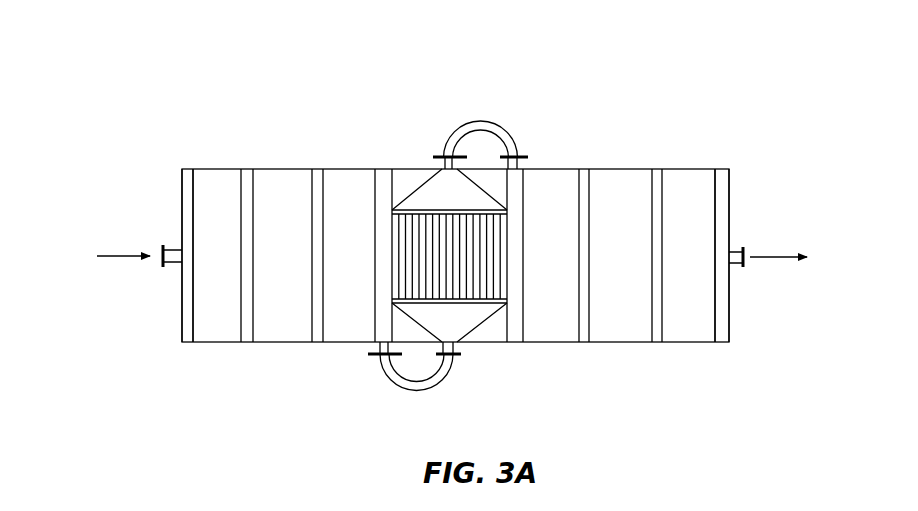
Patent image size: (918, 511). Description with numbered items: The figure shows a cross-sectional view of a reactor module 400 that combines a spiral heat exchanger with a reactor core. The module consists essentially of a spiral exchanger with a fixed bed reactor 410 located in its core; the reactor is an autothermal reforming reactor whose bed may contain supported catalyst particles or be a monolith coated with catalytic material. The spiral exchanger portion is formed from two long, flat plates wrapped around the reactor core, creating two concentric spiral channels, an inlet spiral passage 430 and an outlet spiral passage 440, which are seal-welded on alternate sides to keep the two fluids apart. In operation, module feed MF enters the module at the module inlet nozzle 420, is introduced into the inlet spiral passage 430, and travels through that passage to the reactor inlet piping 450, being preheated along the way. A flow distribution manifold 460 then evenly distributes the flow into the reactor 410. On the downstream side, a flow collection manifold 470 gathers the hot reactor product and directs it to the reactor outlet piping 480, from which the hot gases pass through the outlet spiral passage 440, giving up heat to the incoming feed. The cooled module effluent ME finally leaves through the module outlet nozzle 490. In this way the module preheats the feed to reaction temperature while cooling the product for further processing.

The reactor module 400 is at (147, 115).
The reactor 410 is at (438, 228).
The module inlet nozzle 420 is at (172, 266).
The inlet spiral passage 430 is at (185, 196).
The outlet spiral passage 440 is at (722, 204).
The reactor inlet piping 450 is at (397, 380).
The flow distribution manifold 460 is at (468, 322).
The flow collection manifold 470 is at (478, 182).
The reactor outlet piping 480 is at (481, 121).
The module outlet nozzle 490 is at (733, 266).